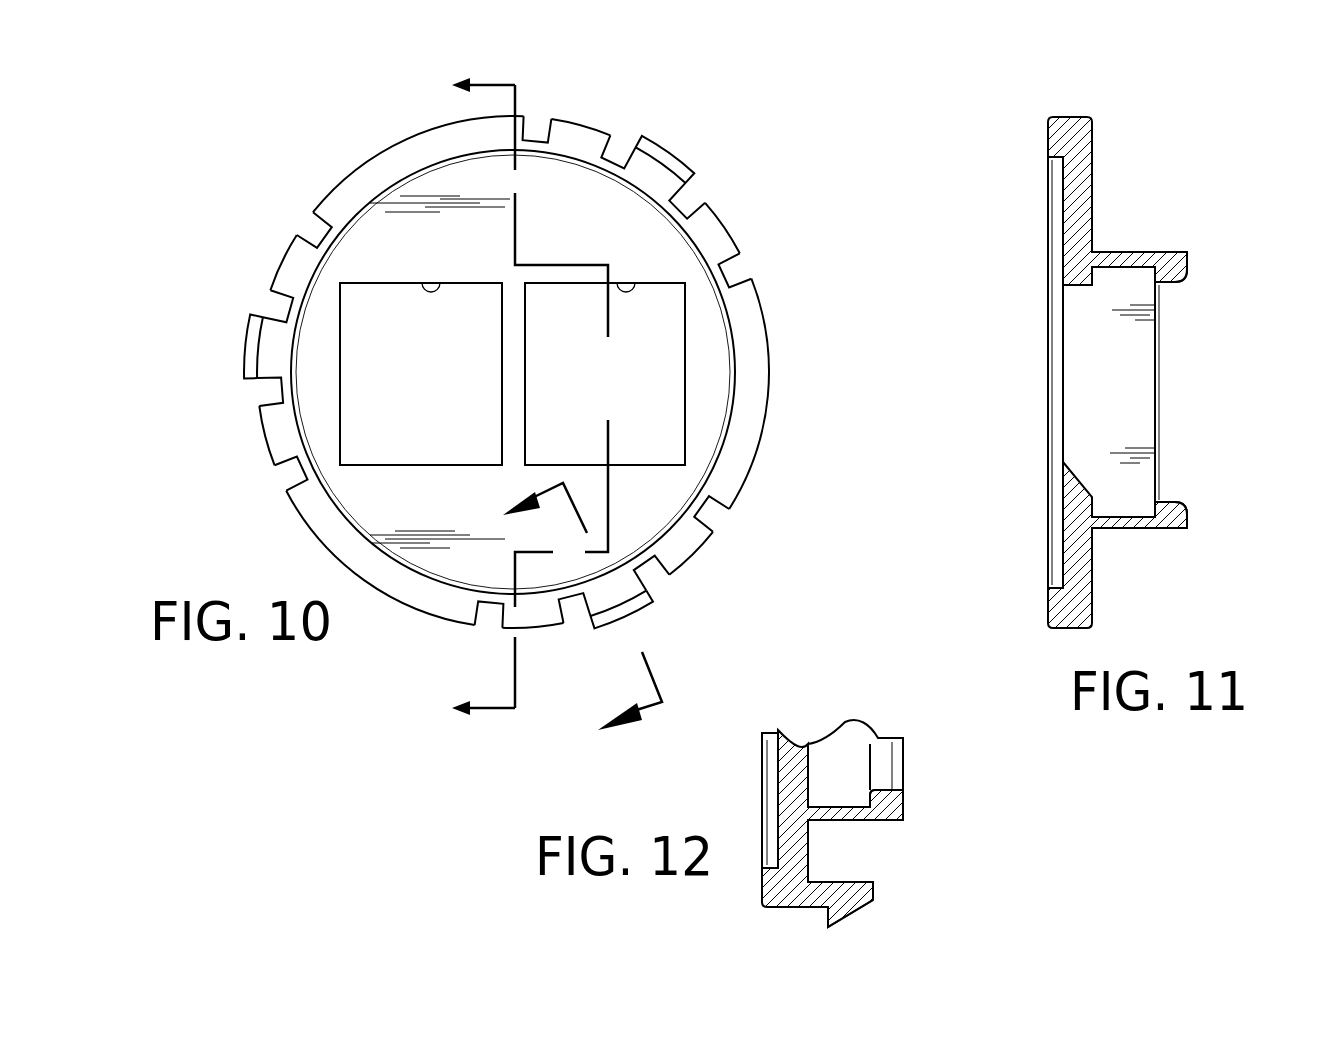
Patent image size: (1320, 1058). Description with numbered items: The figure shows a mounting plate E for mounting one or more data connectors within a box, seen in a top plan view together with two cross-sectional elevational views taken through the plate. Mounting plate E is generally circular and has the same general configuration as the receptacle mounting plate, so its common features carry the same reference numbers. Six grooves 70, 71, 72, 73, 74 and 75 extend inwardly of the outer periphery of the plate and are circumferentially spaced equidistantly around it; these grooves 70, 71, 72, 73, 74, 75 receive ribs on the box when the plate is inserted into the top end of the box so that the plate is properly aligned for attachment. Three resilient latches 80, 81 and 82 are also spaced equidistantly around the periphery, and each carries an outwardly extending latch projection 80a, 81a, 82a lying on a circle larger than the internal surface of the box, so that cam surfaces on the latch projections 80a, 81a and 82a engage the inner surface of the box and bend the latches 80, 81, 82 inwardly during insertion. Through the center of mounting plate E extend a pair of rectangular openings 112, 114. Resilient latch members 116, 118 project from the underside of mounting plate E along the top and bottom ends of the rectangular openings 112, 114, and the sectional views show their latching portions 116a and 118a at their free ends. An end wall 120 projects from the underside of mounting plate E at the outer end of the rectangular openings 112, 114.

In FIG. 10, the groove 70 is at (500, 625).
In FIG. 10, the groove 71 is at (290, 480).
In FIG. 10, the groove 72 is at (312, 235).
In FIG. 10, the groove 73 is at (536, 118).
In FIG. 10, the groove 74 is at (745, 264).
In FIG. 10, the groove 75 is at (722, 516).
In FIG. 10, the resilient latch 80 is at (660, 582).
In FIG. 12, the resilient latch 80 is at (848, 882).
In FIG. 10, the latch projection 80a is at (628, 608).
In FIG. 12, the latch projection 80a is at (832, 925).
In FIG. 10, the resilient latch 81 is at (270, 305).
In FIG. 10, the latch projection 81a is at (255, 336).
In FIG. 10, the resilient latch 82 is at (618, 148).
In FIG. 10, the latch projection 82a is at (675, 170).
In FIG. 10, the rectangular opening 112 is at (433, 287).
In FIG. 10, the rectangular opening 114 is at (630, 287).
In FIG. 11, the resilient latch member 116 is at (1170, 252).
In FIG. 11, the latch projection of latch member 116 116a is at (1170, 282).
In FIG. 11, the resilient latch member 118 is at (1175, 528).
In FIG. 12, the resilient latch member 118 is at (876, 828).
In FIG. 11, the latch projection of latch member 118 118a is at (1175, 502).
In FIG. 12, the latch projection of latch member 118 118a is at (880, 790).
In FIG. 11, the end wall 120 is at (1142, 408).
In FIG. 10, the mounting plate E is at (484, 425).
In FIG. 11, the mounting plate E is at (1166, 358).
In FIG. 12, the mounting plate E is at (883, 798).